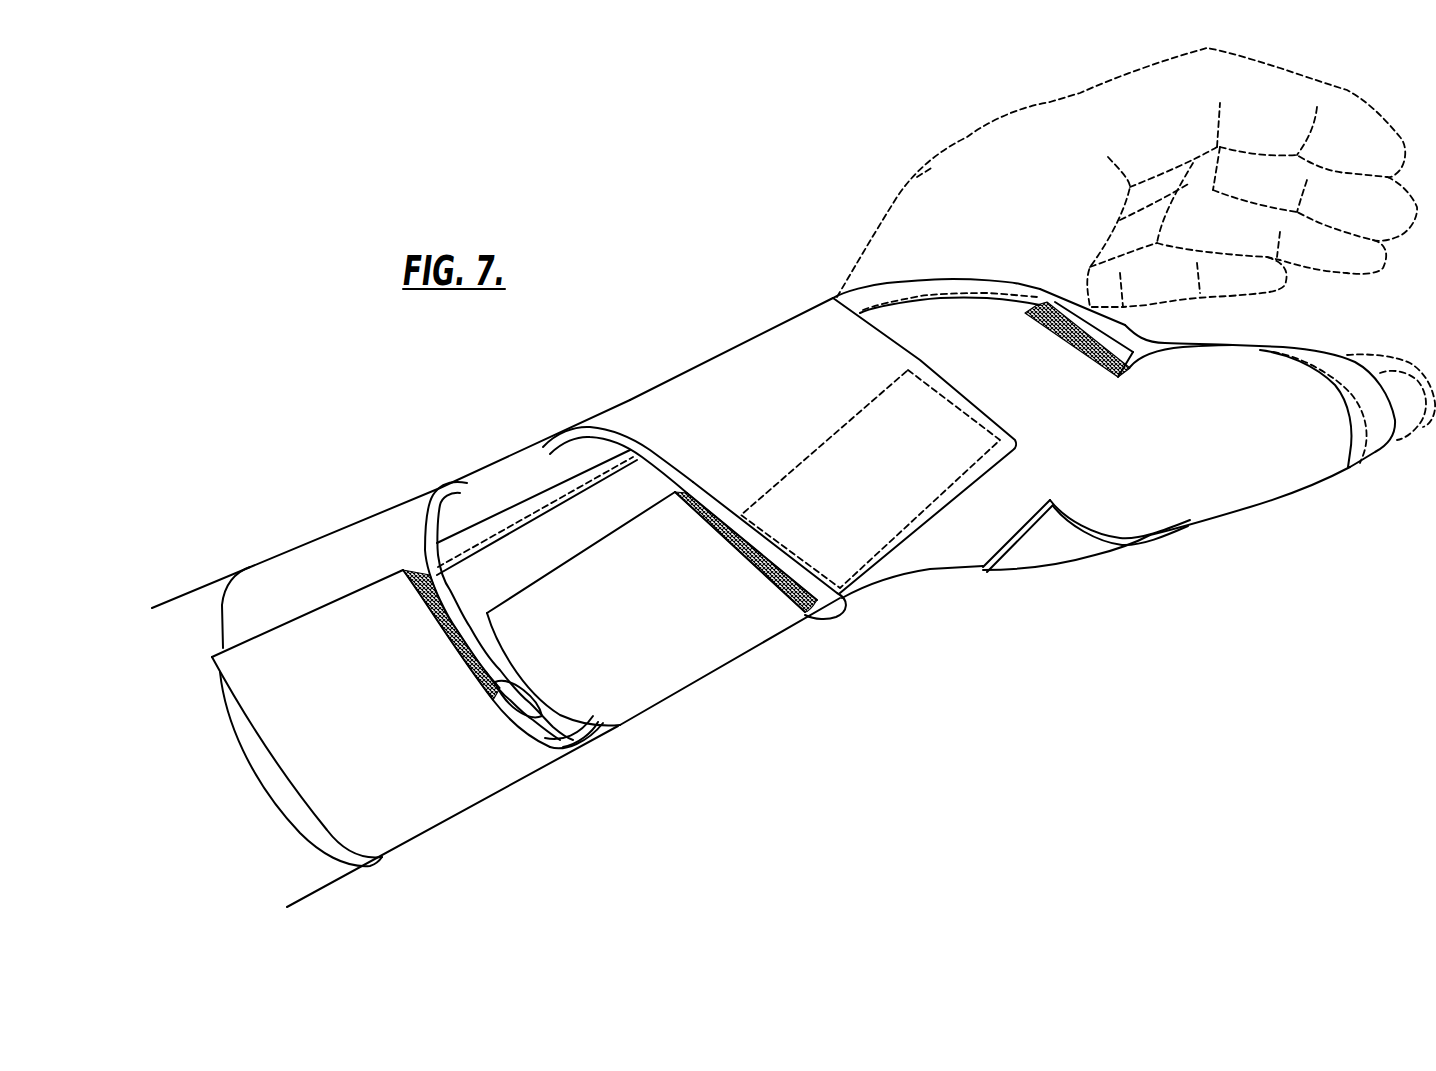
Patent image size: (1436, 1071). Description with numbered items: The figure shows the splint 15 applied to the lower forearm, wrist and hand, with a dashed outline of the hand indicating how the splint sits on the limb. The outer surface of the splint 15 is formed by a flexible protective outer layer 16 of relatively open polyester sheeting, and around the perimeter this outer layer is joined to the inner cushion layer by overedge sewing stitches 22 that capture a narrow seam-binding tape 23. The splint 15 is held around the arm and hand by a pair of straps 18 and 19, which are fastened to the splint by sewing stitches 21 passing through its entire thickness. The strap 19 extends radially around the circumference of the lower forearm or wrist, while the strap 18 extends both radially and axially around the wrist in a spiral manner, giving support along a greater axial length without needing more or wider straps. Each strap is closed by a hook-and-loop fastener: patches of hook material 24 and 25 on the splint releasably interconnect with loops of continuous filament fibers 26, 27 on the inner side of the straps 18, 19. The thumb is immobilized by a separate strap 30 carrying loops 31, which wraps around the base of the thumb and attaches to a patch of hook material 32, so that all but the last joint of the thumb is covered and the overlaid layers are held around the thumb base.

The splint 15 is at (743, 280).
The flexible protective outer layer 16 is at (580, 452).
The strap 18 is at (711, 400).
The strap 19 is at (334, 555).
The sewing stitches 21 is at (490, 535).
The overedge sewing stitches 22 is at (563, 501).
The seam-binding tape 23 is at (526, 512).
The patch of hook material 24 is at (842, 599).
The patch of hook material 25 is at (463, 690).
The loops of continuous filament fibers 26 is at (740, 565).
The loops of continuous filament fibers 27 is at (537, 749).
The strap 30 is at (1038, 548).
The loops 31 is at (1043, 288).
The patch of hook material 32 is at (1067, 307).